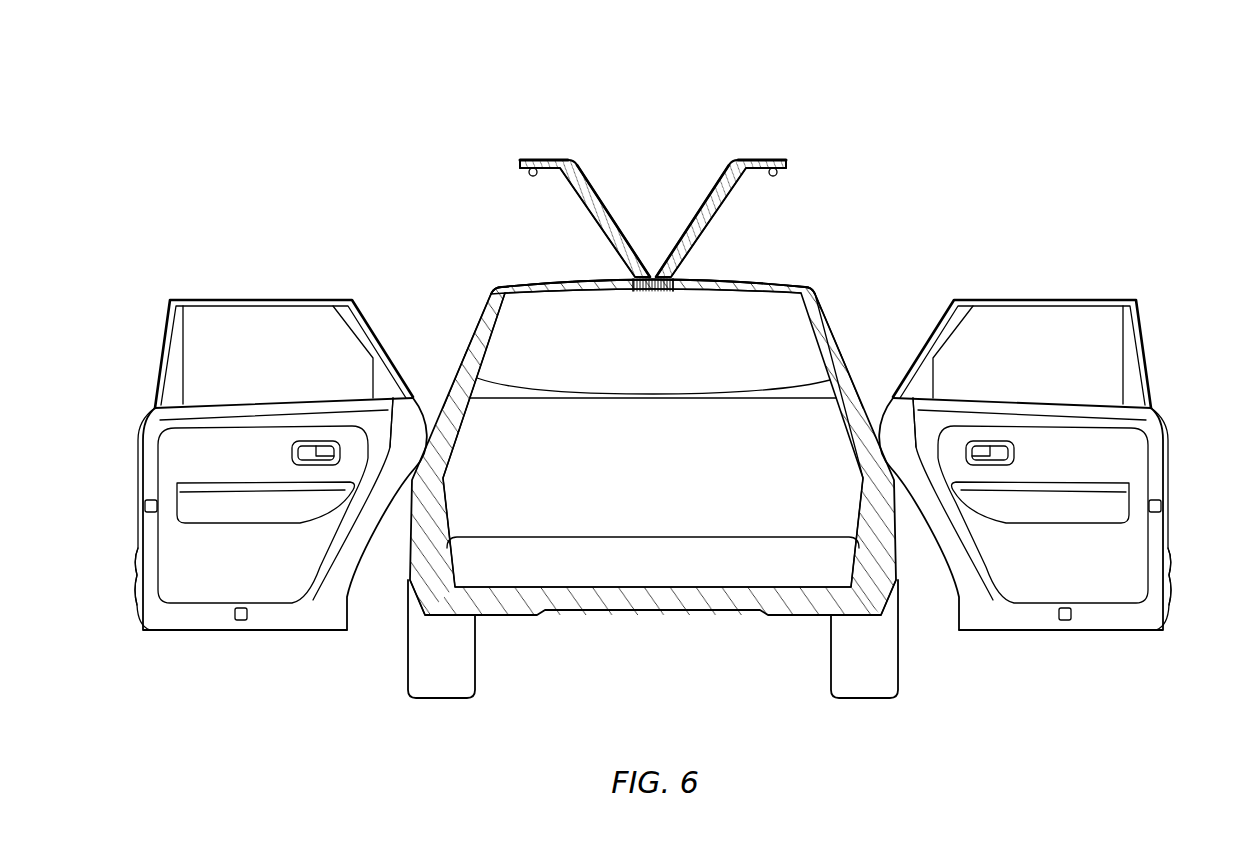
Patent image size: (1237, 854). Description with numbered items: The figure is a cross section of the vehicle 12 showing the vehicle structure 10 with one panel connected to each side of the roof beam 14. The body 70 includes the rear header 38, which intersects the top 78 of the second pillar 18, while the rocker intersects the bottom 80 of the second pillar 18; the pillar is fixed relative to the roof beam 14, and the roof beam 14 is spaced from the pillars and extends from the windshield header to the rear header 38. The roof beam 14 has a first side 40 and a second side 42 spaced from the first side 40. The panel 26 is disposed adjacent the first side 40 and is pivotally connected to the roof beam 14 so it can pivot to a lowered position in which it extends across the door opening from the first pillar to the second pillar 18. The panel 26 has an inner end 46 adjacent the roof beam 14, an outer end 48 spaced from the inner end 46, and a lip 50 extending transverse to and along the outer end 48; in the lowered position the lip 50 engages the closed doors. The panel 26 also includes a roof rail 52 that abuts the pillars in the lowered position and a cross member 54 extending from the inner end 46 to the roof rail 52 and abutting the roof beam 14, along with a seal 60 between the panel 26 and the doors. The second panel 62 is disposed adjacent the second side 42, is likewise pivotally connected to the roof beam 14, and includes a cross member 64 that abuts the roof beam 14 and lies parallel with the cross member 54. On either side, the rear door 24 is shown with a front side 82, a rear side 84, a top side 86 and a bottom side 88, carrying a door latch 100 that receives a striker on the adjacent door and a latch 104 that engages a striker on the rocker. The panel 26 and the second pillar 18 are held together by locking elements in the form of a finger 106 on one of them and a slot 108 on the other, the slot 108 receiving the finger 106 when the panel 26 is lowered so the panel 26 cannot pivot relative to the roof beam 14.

The vehicle structure 10 is at (525, 618).
The vehicle 12 is at (653, 143).
The roof beam 14 is at (652, 296).
The second pillar 18 is at (432, 368).
The rear door 24 is at (163, 318).
The panel 26 is at (602, 190).
The rear header 38 is at (760, 292).
The first side 40 is at (675, 286).
The second side 42 is at (630, 288).
The inner end 46 is at (653, 277).
The outer end 48 is at (579, 159).
The lip 50 is at (541, 158).
The roof rail 52 is at (535, 177).
The cross member 54 is at (709, 235).
The seal 60 is at (521, 160).
The second panel 62 is at (706, 190).
The cross member 64 is at (597, 235).
The body 70 is at (770, 615).
The top 78 is at (478, 295).
The bottom 80 is at (415, 603).
The front side 82 is at (142, 548).
The rear side 84 is at (396, 450).
The top side 86 is at (249, 406).
The bottom side 88 is at (268, 632).
The door latch 100 is at (145, 504).
The latch 104 is at (241, 620).
The finger 106 is at (531, 176).
The slot 108 is at (500, 282).